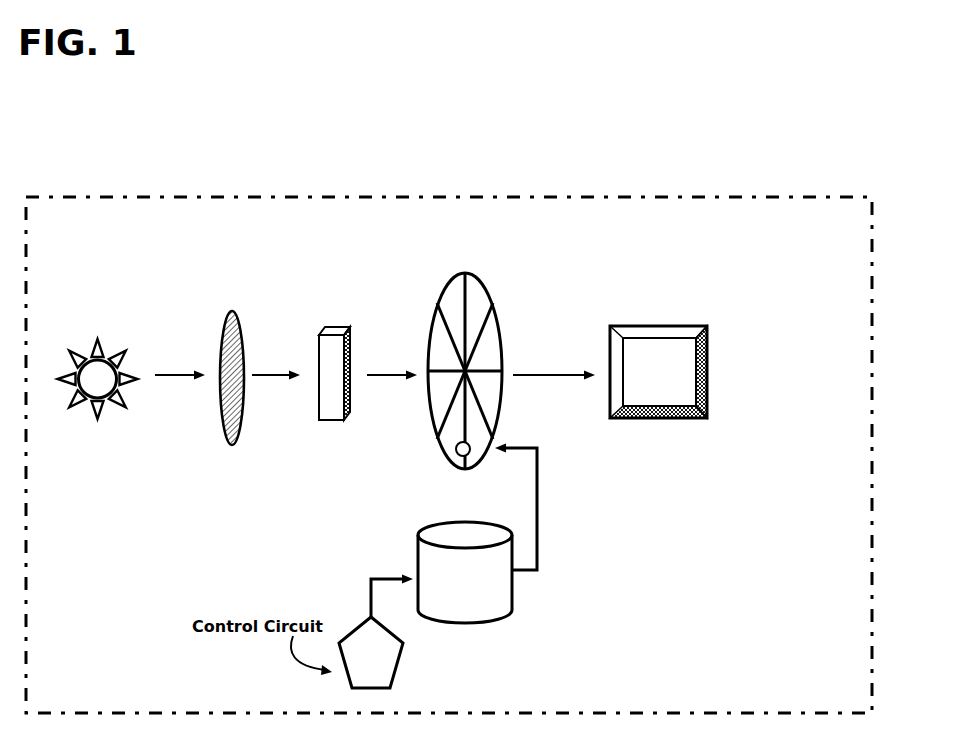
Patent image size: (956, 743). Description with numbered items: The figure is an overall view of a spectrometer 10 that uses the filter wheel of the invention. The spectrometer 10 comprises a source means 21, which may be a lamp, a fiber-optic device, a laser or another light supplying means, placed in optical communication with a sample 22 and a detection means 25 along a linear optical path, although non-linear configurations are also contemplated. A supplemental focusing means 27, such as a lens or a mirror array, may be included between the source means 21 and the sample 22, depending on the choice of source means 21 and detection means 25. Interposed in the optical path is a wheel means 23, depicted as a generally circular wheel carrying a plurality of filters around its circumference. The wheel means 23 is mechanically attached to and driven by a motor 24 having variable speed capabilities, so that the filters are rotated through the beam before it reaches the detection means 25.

The spectrometer 10 is at (499, 176).
The source means 21 is at (81, 430).
The sample 22 is at (317, 300).
The wheel means 23 is at (523, 340).
The motor 24 is at (538, 601).
The detection means 25 is at (732, 341).
The supplemental focusing means 27 is at (229, 289).